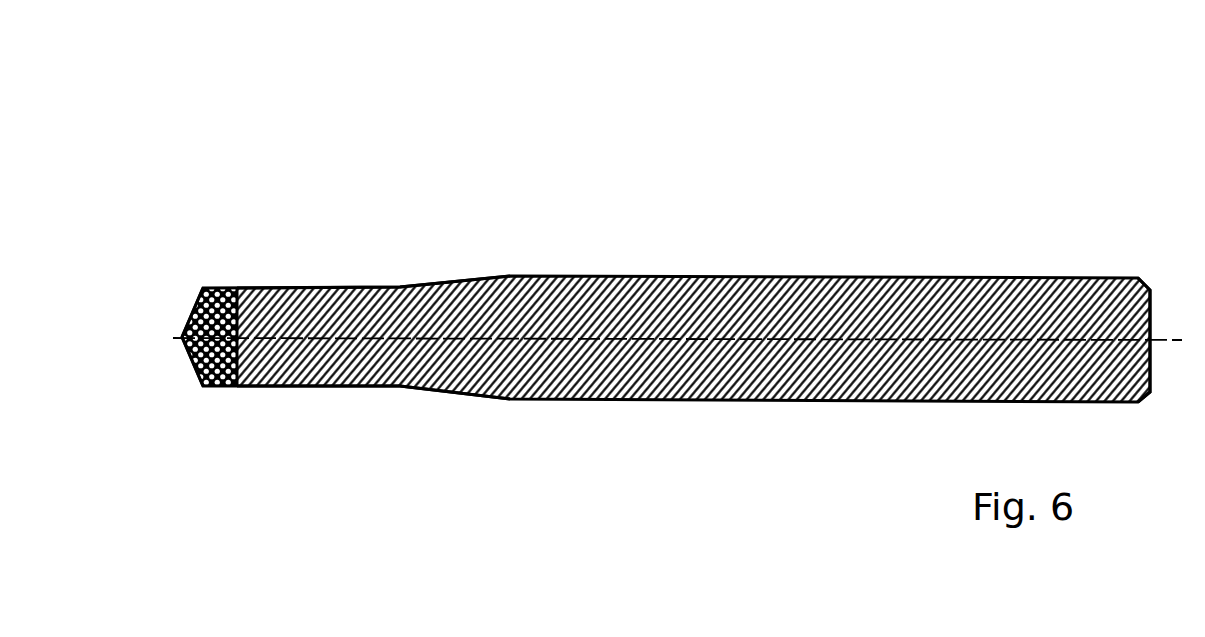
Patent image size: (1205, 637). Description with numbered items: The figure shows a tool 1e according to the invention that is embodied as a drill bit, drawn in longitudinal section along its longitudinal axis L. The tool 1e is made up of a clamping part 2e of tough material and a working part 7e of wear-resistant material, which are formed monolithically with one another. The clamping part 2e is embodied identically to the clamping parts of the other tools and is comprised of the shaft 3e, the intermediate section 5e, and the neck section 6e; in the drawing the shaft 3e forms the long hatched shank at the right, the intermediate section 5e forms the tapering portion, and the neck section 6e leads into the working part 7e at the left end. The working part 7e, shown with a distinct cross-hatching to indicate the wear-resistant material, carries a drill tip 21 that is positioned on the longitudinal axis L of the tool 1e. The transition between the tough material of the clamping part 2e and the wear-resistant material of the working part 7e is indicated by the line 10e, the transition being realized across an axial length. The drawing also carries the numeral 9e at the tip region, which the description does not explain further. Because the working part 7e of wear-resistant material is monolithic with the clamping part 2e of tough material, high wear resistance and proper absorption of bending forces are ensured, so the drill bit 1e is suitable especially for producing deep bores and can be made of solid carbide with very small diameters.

The tool 1e is at (813, 268).
The clamping part 2e is at (543, 308).
The shaft 3e is at (1045, 278).
The intermediate section 5e is at (470, 402).
The neck section 6e is at (336, 288).
The working part 7e is at (222, 293).
The tip face 9e is at (185, 310).
The line 10e is at (242, 362).
The drill tip 21 is at (181, 337).
The longitudinal axis L is at (697, 338).